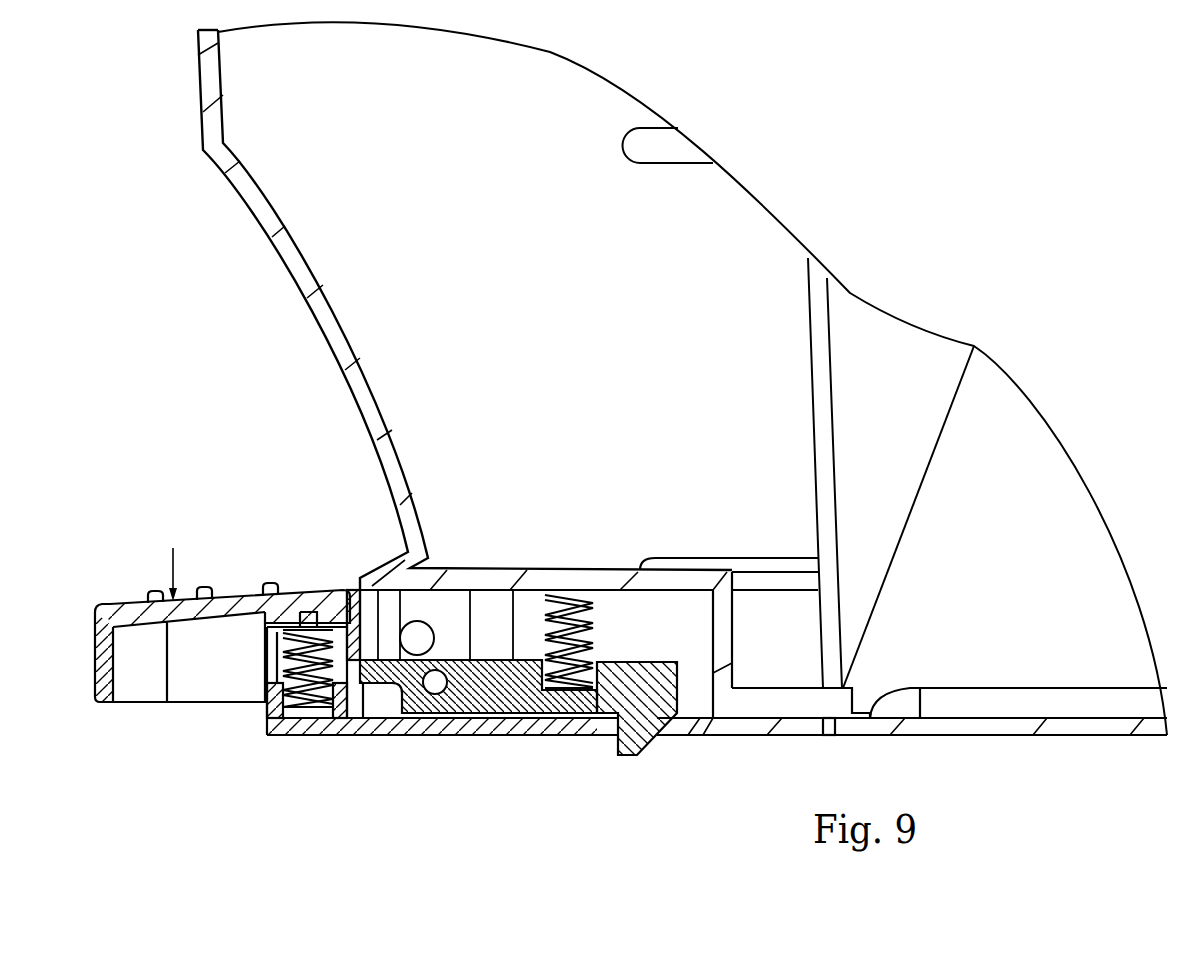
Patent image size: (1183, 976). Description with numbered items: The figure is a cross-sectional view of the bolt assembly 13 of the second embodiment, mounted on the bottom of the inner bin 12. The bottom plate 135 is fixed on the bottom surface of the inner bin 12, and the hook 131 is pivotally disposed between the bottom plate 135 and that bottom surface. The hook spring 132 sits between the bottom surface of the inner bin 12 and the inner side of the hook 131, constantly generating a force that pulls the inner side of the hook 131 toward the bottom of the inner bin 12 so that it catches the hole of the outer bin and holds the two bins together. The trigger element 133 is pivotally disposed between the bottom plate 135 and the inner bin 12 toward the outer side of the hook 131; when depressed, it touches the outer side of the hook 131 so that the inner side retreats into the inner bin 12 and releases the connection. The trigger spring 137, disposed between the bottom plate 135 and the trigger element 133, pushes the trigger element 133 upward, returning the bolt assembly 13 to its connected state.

The inner bin 12 is at (258, 215).
The bolt assembly 13 is at (338, 747).
The hook 131 is at (645, 737).
The hook spring 132 is at (594, 632).
The trigger element 133 is at (240, 592).
The bottom plate 135 is at (452, 730).
The trigger spring 137 is at (287, 648).